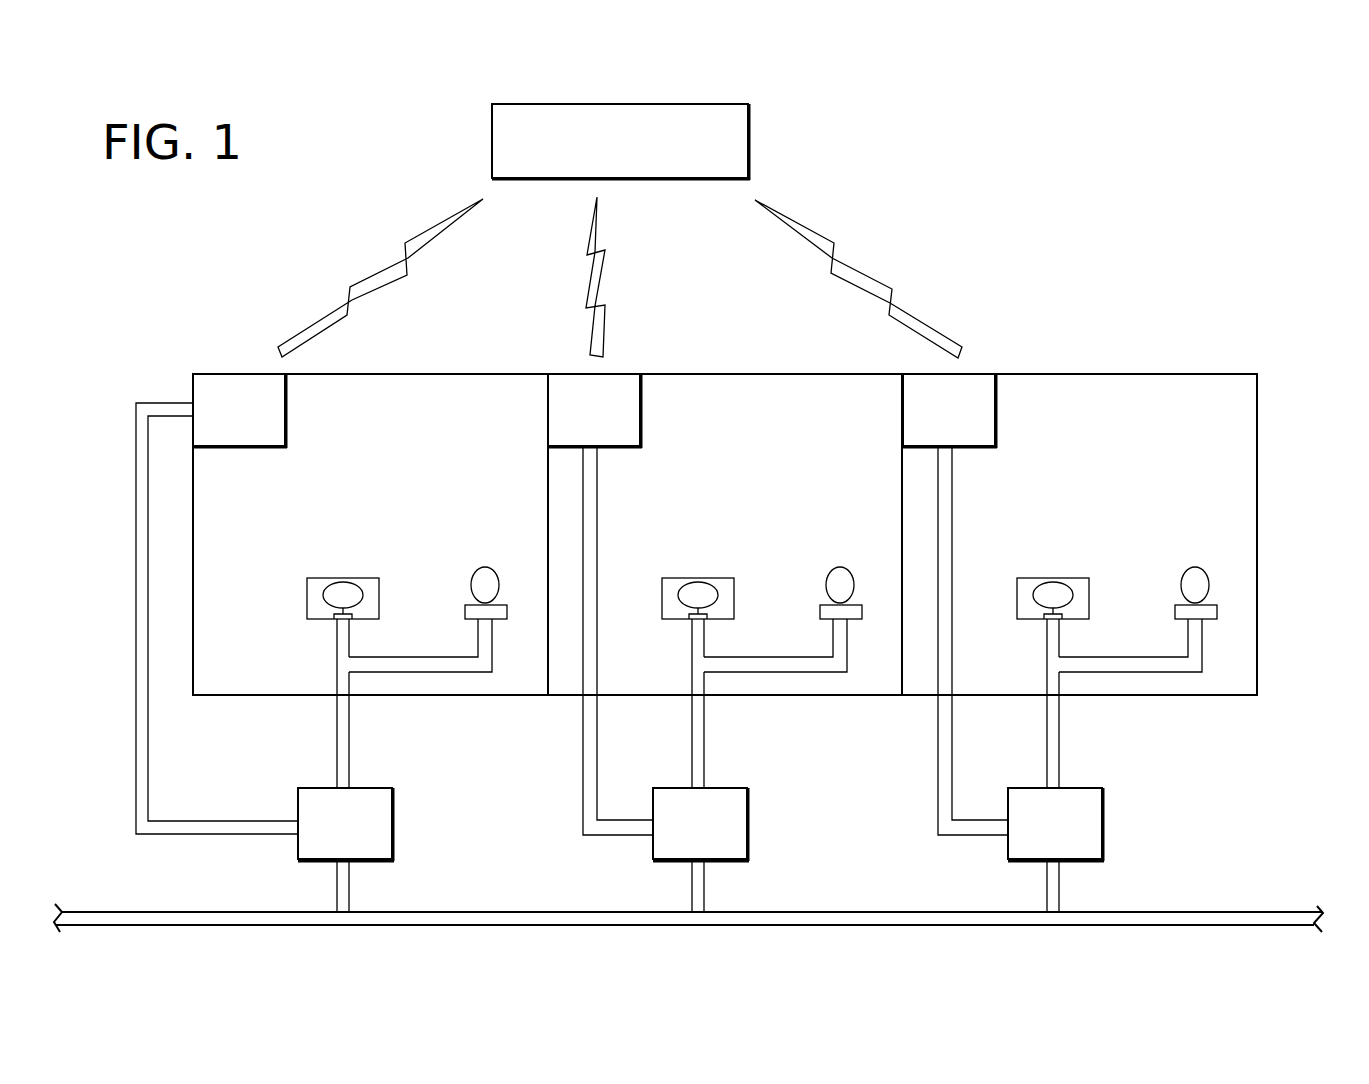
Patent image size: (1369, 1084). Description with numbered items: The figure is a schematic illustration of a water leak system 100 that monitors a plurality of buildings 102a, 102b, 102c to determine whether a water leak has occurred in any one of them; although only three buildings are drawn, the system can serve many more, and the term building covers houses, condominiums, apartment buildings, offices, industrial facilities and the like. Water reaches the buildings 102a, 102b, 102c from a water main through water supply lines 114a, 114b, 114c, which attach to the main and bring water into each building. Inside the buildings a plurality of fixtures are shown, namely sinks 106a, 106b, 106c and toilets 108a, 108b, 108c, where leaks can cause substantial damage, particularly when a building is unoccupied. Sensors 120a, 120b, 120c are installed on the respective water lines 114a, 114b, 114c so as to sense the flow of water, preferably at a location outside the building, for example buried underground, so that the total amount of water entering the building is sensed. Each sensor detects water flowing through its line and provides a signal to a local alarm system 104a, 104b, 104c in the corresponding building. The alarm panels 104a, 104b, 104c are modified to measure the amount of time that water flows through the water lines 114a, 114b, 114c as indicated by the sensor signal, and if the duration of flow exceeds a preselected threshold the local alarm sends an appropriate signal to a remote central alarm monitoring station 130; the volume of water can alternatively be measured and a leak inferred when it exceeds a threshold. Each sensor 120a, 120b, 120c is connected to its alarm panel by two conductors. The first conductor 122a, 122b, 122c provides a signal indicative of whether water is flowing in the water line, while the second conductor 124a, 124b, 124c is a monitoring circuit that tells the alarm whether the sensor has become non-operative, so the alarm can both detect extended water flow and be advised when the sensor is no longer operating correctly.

The water leak system 100 is at (1180, 183).
The remote central alarm monitoring station 130 is at (690, 104).
The building 102a is at (463, 344).
The building 102b is at (776, 342).
The building 102c is at (1173, 344).
The local alarm system 104a is at (287, 431).
The local alarm system 104b is at (644, 411).
The local alarm system 104c is at (998, 411).
The sink 106a is at (318, 578).
The sink 106b is at (663, 576).
The sink 106c is at (1018, 576).
The toilet 108a is at (485, 567).
The toilet 108b is at (783, 596).
The toilet 108c is at (1138, 596).
The water supply line 114a is at (350, 731).
The water supply line 114b is at (742, 765).
The water supply line 114c is at (1096, 765).
The sensor 120a is at (394, 830).
The sensor 120b is at (743, 824).
The sensor 120c is at (1097, 824).
The first conductor 122a is at (208, 834).
The first conductor 122b is at (606, 670).
The first conductor 122c is at (961, 670).
The second conductor 124a is at (255, 820).
The second conductor 124b is at (631, 633).
The second conductor 124c is at (985, 633).